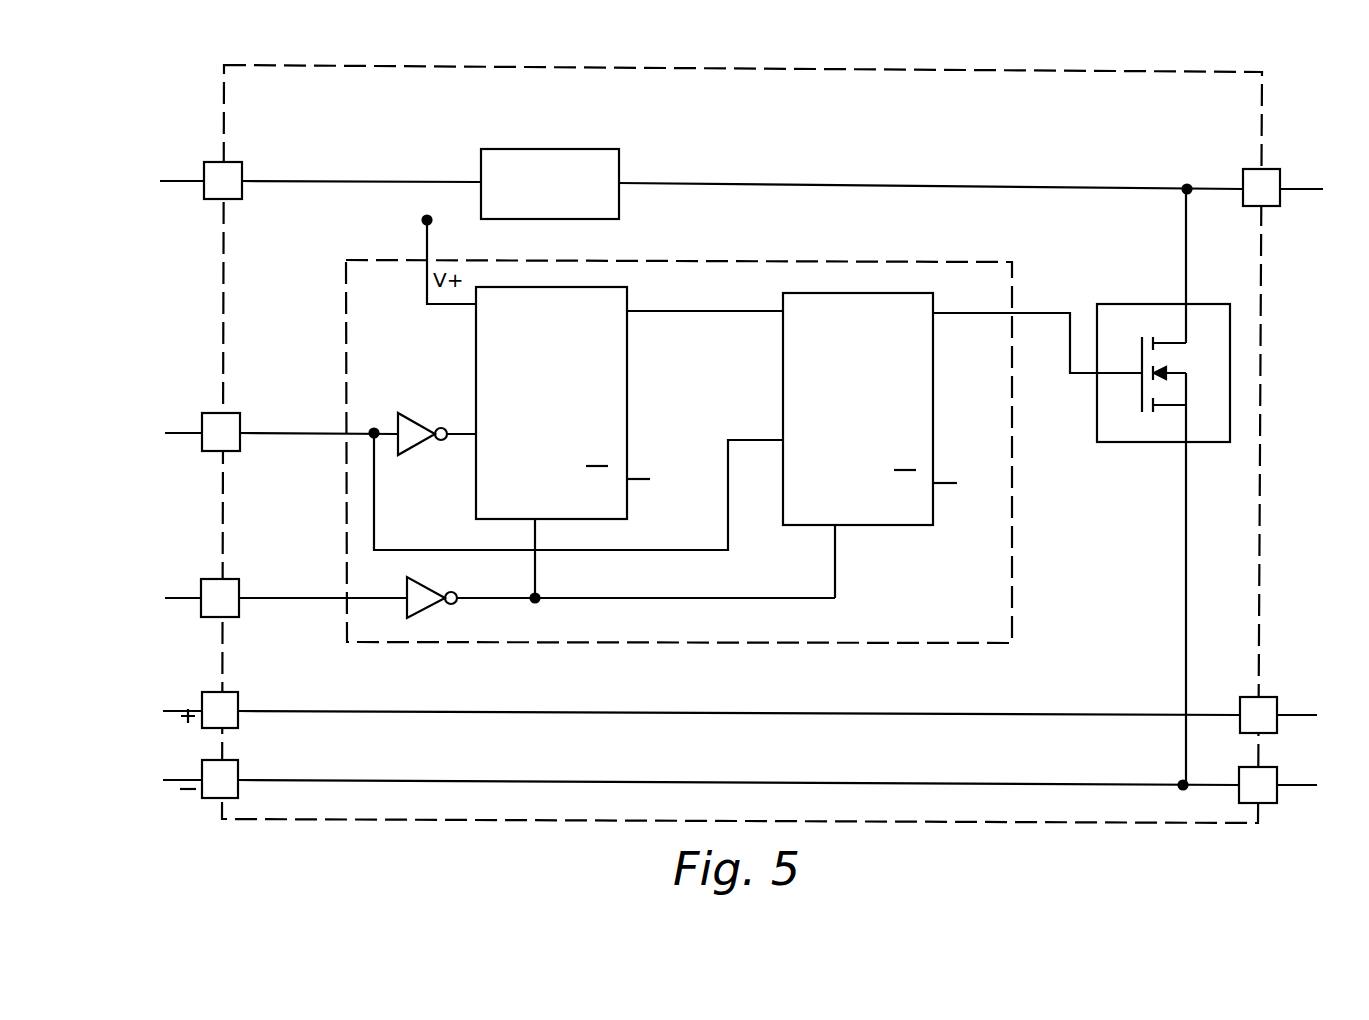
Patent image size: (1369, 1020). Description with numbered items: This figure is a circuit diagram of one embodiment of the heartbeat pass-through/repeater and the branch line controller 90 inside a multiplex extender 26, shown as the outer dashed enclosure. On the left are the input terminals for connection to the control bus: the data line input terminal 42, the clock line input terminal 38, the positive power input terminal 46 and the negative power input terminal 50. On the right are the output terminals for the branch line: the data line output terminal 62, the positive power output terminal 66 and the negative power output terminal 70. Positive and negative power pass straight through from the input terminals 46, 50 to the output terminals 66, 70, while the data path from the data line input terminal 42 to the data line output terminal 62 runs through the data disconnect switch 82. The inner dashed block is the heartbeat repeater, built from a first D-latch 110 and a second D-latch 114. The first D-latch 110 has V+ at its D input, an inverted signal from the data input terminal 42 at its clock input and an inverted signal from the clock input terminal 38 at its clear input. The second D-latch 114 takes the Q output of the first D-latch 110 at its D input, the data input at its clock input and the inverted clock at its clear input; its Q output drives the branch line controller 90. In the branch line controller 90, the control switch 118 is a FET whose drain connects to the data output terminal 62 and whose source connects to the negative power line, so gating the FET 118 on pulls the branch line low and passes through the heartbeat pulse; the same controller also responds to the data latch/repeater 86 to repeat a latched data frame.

The multiplex extender 26 is at (1263, 532).
The clock line input terminal 38 is at (210, 579).
The data line input terminal 42 is at (214, 162).
The positive power input terminal 46 is at (202, 700).
The negative power input terminal 50 is at (202, 770).
The data line output terminal 62 is at (1280, 178).
The positive power output terminal 66 is at (1272, 675).
The negative power output terminal 70 is at (1277, 797).
The data disconnect switch 82 is at (562, 149).
The data latch/repeater 86 is at (1015, 598).
The branch line controller 90 is at (1214, 410).
The first D-latch 110 is at (613, 287).
The second D-latch 114 is at (868, 293).
The control switch 118 is at (1220, 372).